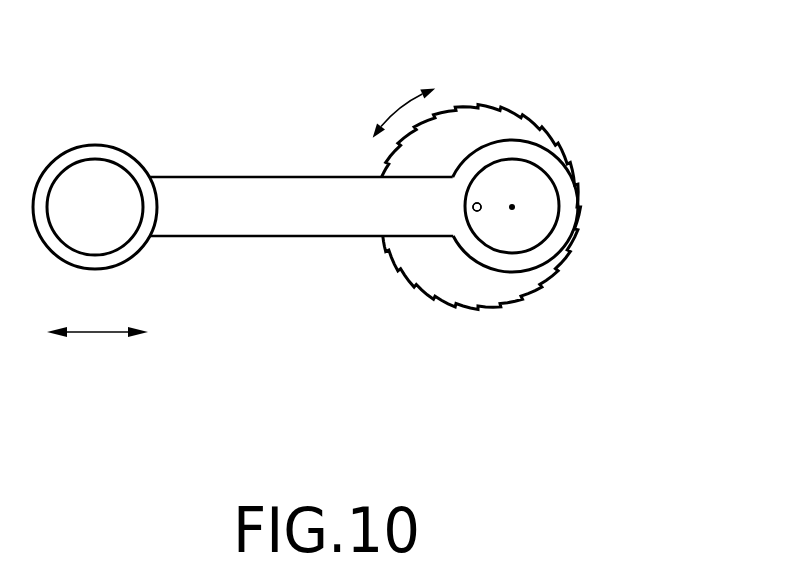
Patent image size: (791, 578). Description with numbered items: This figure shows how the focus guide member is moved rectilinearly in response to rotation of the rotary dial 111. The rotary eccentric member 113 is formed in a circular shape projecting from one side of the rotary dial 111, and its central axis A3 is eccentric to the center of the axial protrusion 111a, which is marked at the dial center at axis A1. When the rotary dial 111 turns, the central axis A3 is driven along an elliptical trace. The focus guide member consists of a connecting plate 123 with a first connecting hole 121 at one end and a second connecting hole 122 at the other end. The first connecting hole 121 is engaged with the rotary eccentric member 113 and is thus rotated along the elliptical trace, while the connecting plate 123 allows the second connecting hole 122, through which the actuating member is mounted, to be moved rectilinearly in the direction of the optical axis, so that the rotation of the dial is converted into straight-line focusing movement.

The rotary dial 111 is at (481, 113).
The axial protrusion 111a is at (481, 213).
The rotary eccentric member 113 is at (535, 173).
The first connecting hole 121 is at (572, 207).
The second connecting hole 122 is at (90, 148).
The connecting plate 123 is at (272, 188).
The rotation axis A1 is at (472, 207).
The central axis A3 is at (513, 208).